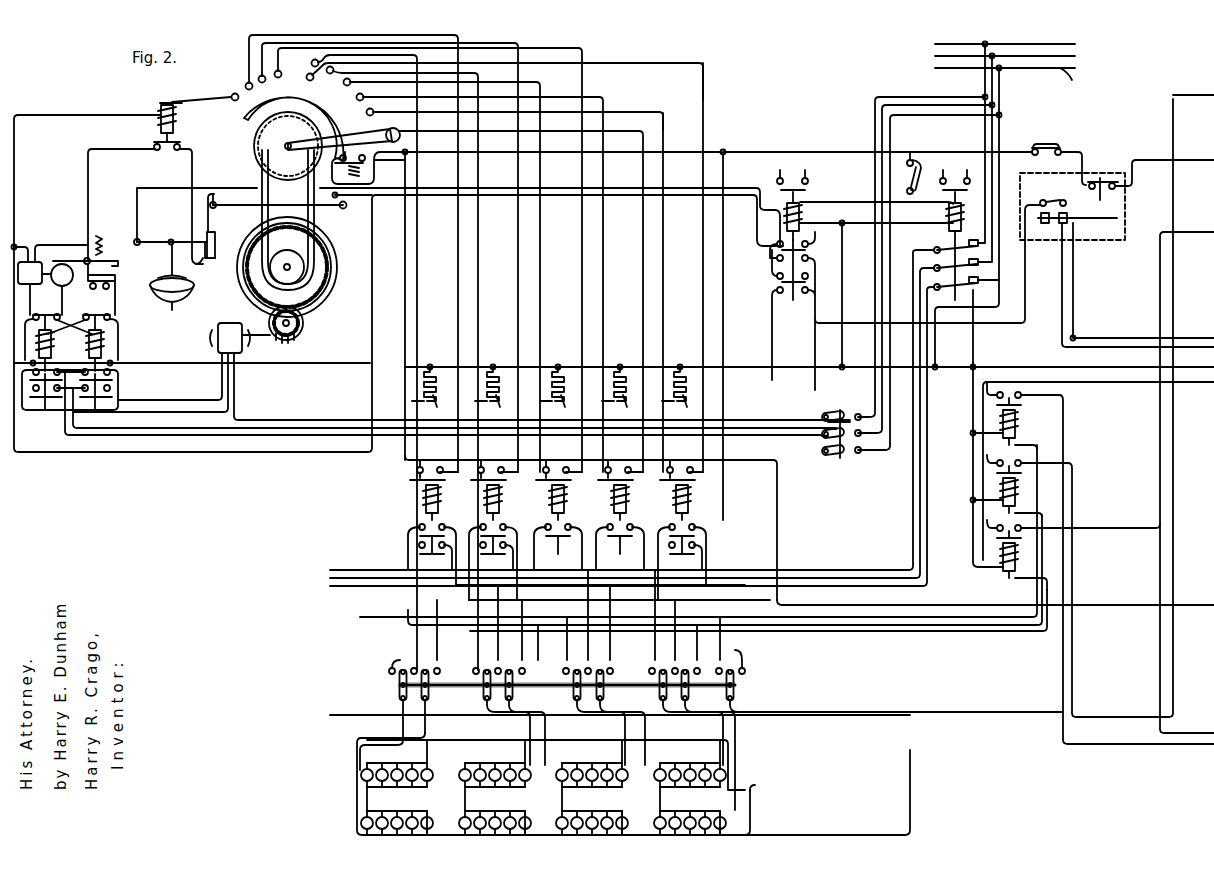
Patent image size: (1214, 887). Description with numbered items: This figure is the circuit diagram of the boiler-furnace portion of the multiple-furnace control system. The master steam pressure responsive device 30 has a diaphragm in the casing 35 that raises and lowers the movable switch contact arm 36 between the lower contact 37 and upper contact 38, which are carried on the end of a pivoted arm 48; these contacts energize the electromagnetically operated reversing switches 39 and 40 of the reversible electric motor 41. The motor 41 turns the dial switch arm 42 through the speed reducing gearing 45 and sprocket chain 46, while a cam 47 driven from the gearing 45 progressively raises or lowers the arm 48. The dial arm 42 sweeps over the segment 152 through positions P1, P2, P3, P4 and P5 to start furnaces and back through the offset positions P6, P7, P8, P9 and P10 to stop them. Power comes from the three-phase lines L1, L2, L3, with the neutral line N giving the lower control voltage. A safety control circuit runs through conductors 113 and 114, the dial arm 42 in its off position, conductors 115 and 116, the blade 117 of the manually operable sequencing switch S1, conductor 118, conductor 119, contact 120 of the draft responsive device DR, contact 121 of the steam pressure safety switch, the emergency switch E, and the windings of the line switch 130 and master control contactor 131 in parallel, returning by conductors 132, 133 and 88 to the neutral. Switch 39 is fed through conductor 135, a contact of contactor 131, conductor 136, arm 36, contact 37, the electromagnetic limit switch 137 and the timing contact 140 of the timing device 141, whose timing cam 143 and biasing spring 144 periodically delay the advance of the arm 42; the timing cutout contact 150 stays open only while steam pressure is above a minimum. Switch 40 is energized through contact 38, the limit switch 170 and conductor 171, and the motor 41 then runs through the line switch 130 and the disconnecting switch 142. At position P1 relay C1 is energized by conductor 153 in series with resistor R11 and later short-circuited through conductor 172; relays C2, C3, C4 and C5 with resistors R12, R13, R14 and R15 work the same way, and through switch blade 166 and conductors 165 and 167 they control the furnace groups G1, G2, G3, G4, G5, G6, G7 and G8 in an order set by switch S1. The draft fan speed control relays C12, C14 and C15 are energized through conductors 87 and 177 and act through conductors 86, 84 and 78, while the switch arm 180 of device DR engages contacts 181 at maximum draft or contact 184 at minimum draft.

The electromagnetic limit switch 137 is at (176, 118).
The segment 152 is at (247, 118).
The conductor 136 is at (164, 188).
The biasing spring 144 is at (97, 236).
The timing contact 140 is at (108, 252).
The timing device 141 is at (31, 288).
The timing cam 143 is at (58, 289).
The timing cutout contact 150 is at (115, 281).
The contact 38 is at (205, 232).
The movable switch contact arm 36 is at (172, 242).
The master steam pressure responsive device 30 is at (169, 262).
The contact 37 is at (206, 262).
The pivoted arm 48 is at (243, 208).
The sprocket chain 46 is at (316, 212).
The dial switch arm 42 is at (352, 138).
The limit switch 170 is at (368, 172).
The casing 35 is at (184, 300).
The cam 47 is at (240, 283).
The reversible electric motor 41 is at (228, 330).
The speed reducing gearing 45 is at (300, 332).
The electromagnetically operated reversing switch 39 is at (68, 340).
The electromagnetically operated reversing switch 40 is at (105, 340).
The conductor 133 is at (172, 363).
The conductor 171 is at (190, 452).
The conductor 114 is at (400, 234).
The conductor 115 is at (437, 131).
The conductor 116 is at (723, 176).
The conductor 153 is at (675, 65).
The conductor 172 is at (665, 130).
The conductor 135 is at (772, 351).
The conductor 132 is at (842, 270).
The master control contactor 131 is at (806, 211).
The line switch 130 is at (958, 200).
The manually operable emergency switch E is at (920, 163).
The conductor 88 is at (1003, 103).
The three-phase supply line L1 is at (1078, 46).
The three-phase supply line L2 is at (1017, 58).
The three-phase supply line L3 is at (1016, 71).
The neutral line N is at (1069, 82).
The contact of steam pressure responsive safety switch 121 is at (1046, 140).
The contact of draft responsive device 120 is at (1102, 182).
The draft responsive device DR is at (1072, 206).
The contact 184 is at (1064, 201).
The contacts 181 is at (1046, 226).
The switch arm 180 is at (1100, 222).
The conductor 118 is at (848, 715).
The conductor 119 is at (1190, 160).
The conductor 78 is at (1195, 232).
The conductor 87 is at (1190, 367).
The conductor 84 is at (1118, 382).
The conductor 177 is at (1053, 450).
The disconnecting switch 142 is at (842, 460).
The conductor 113 is at (777, 544).
The relay C1 is at (690, 500).
The relay C2 is at (628, 500).
The relay C3 is at (566, 500).
The relay C4 is at (501, 500).
The relay C5 is at (440, 500).
The draft fan speed control relay C12 is at (1018, 430).
The draft fan speed control relay C14 is at (1018, 492).
The draft fan speed control relay C15 is at (1018, 557).
The resistor R11 is at (679, 395).
The resistor R12 is at (619, 395).
The resistor R13 is at (557, 395).
The resistor R14 is at (494, 395).
The resistor R15 is at (431, 395).
The switch blade 166 is at (400, 668).
The blade 117 is at (742, 650).
The sequencing switch S1 is at (395, 686).
The group of boiler furnaces G1 is at (690, 764).
The group of boiler furnaces G2 is at (690, 813).
The group of boiler furnaces G3 is at (592, 764).
The group of boiler furnaces G4 is at (592, 813).
The group of boiler furnaces G5 is at (495, 764).
The group of boiler furnaces G6 is at (495, 813).
The group of boiler furnaces G7 is at (397, 764).
The group of boiler furnaces G8 is at (397, 813).
The conductor 165 is at (745, 750).
The conductor 167 is at (750, 800).
The conductor 86 is at (1168, 744).
The dial switch position contact P1 is at (505, 267).
The dial switch position contact P2 is at (423, 260).
The dial switch position contact P3 is at (383, 257).
The dial switch position contact P4 is at (345, 253).
The dial switch position contact P5 is at (205, 90).
The dial switch position contact P6 is at (357, 358).
The dial switch position contact P7 is at (403, 369).
The dial switch position contact P8 is at (442, 271).
The dial switch position contact P9 is at (480, 277).
The dial switch position contact P10 is at (515, 285).